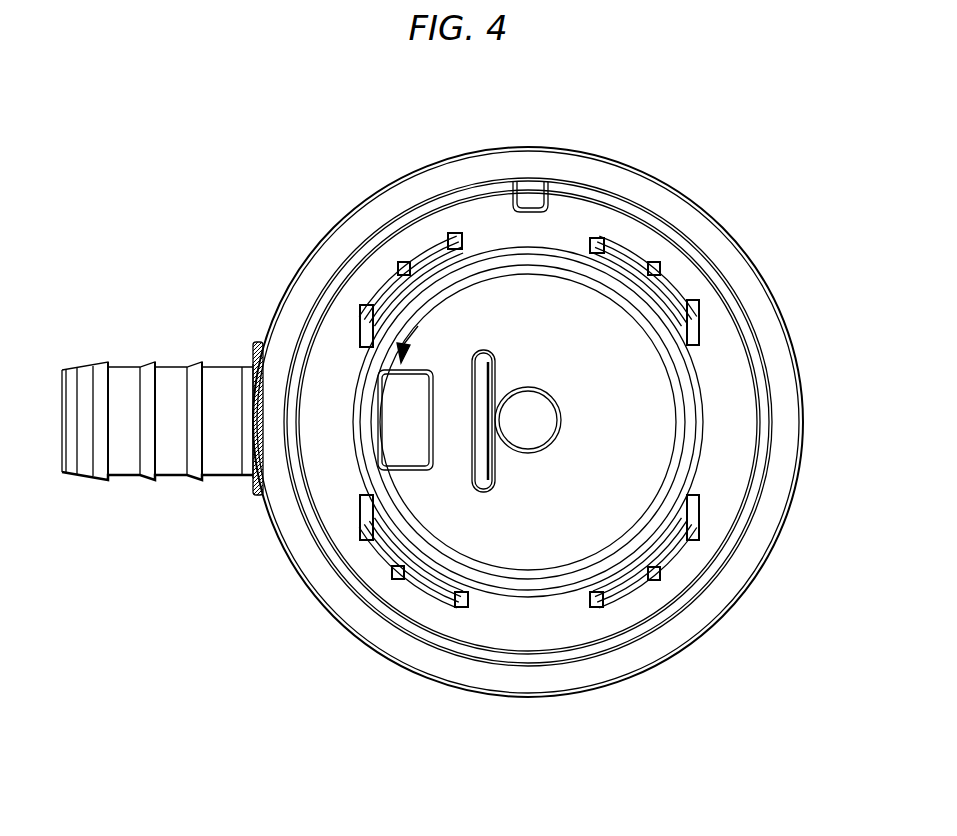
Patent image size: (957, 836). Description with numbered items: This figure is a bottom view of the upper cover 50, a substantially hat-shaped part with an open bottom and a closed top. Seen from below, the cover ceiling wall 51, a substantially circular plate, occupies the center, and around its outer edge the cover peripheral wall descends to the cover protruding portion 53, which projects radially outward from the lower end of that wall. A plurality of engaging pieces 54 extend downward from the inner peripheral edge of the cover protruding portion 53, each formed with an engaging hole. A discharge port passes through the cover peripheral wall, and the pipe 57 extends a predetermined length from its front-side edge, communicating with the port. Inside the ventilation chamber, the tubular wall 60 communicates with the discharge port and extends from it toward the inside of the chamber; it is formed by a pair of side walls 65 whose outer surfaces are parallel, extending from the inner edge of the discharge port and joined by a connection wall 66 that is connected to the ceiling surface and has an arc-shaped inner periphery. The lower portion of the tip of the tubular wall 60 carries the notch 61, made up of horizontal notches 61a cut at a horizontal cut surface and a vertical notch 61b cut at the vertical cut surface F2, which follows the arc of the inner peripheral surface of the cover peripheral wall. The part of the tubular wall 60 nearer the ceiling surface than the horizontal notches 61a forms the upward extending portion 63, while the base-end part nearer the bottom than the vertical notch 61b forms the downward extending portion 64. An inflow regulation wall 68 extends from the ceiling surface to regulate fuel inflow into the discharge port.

The upper cover 50 is at (308, 192).
The cover ceiling wall 51 is at (655, 422).
The cover protruding portion 53 is at (705, 605).
The engaging piece 54 is at (366, 300).
The pipe 57 is at (168, 373).
The tubular wall 60 is at (385, 315).
The notch 61 is at (222, 596).
The horizontal notch 61a is at (330, 514).
The vertical notch 61b is at (330, 487).
The upward extending portion 63 is at (433, 390).
The downward extending portion 64 is at (385, 418).
The side wall 65 is at (497, 362).
The connection wall 66 is at (423, 420).
The inflow regulation wall 68 is at (497, 483).
The vertical cut surface F2 is at (403, 365).